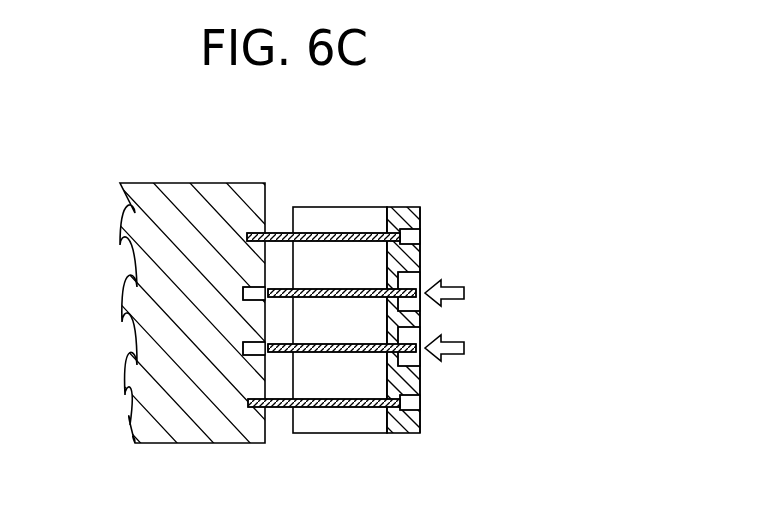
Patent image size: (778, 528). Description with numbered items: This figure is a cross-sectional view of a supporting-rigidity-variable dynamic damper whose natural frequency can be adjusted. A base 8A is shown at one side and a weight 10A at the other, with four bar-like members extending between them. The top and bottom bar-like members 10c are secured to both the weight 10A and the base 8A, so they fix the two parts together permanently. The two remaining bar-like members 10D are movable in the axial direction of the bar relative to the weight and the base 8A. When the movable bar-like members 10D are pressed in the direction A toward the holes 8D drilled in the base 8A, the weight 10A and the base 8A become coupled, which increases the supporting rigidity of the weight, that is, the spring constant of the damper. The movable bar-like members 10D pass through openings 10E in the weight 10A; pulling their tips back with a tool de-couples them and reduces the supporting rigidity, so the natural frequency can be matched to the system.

The base 8A is at (188, 425).
The holes 8D is at (253, 294).
The bar-like members 10c is at (320, 232).
The movable bar-like members 10D is at (366, 288).
The slots 10E is at (414, 281).
The weight 10A is at (417, 418).
The direction A is at (458, 317).